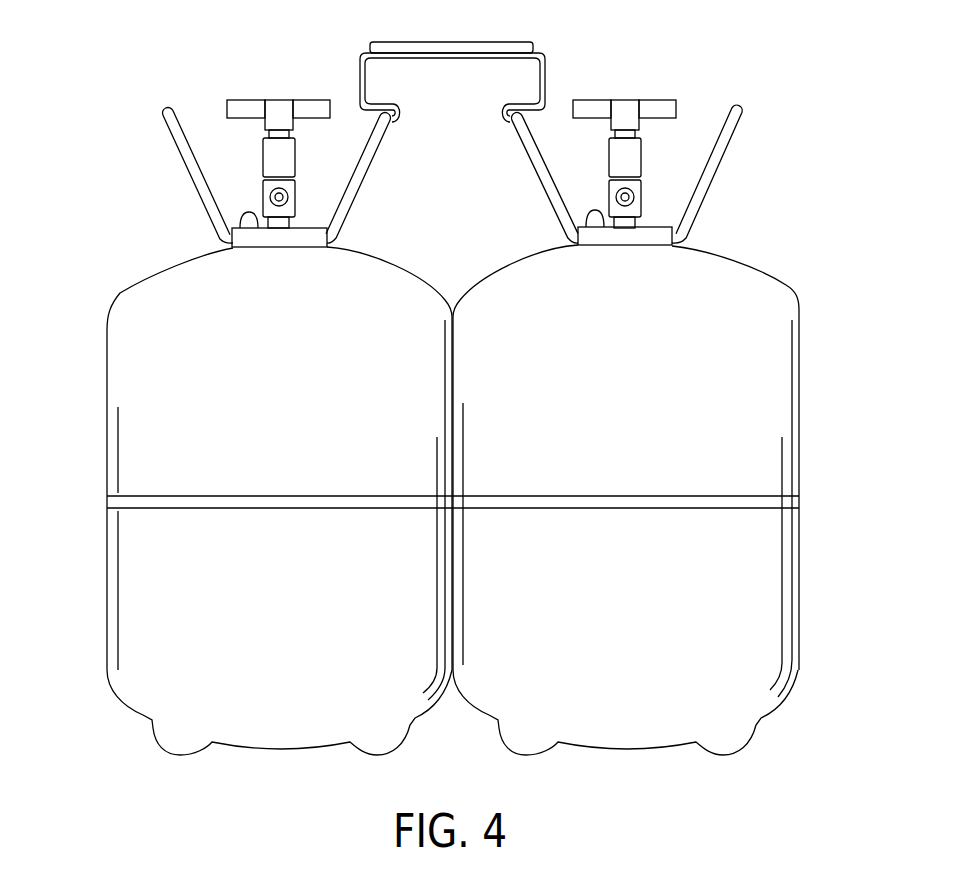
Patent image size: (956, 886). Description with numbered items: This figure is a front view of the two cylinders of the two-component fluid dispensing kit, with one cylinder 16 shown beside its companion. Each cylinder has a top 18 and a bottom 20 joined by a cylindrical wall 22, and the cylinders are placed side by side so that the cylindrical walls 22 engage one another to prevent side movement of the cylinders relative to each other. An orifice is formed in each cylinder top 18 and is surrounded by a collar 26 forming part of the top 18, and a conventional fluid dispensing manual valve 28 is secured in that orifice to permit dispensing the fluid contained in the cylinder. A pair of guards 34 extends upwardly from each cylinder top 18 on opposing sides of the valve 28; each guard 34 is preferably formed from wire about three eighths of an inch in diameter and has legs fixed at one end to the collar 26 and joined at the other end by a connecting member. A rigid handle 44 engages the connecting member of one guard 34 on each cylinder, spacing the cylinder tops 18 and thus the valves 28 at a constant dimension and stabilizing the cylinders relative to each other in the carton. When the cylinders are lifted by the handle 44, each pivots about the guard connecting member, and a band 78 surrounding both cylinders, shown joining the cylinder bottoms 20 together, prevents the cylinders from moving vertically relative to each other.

The cylinder 16 is at (727, 258).
The cylinder top 18 is at (379, 260).
The cylinder bottom 20 is at (285, 753).
The cylindrical wall 22 is at (105, 470).
The collar 26 is at (258, 228).
The fluid dispensing manual valve 28 is at (243, 95).
The guard 34 is at (188, 176).
The rigid handle 44 is at (373, 42).
The band 78 is at (555, 496).